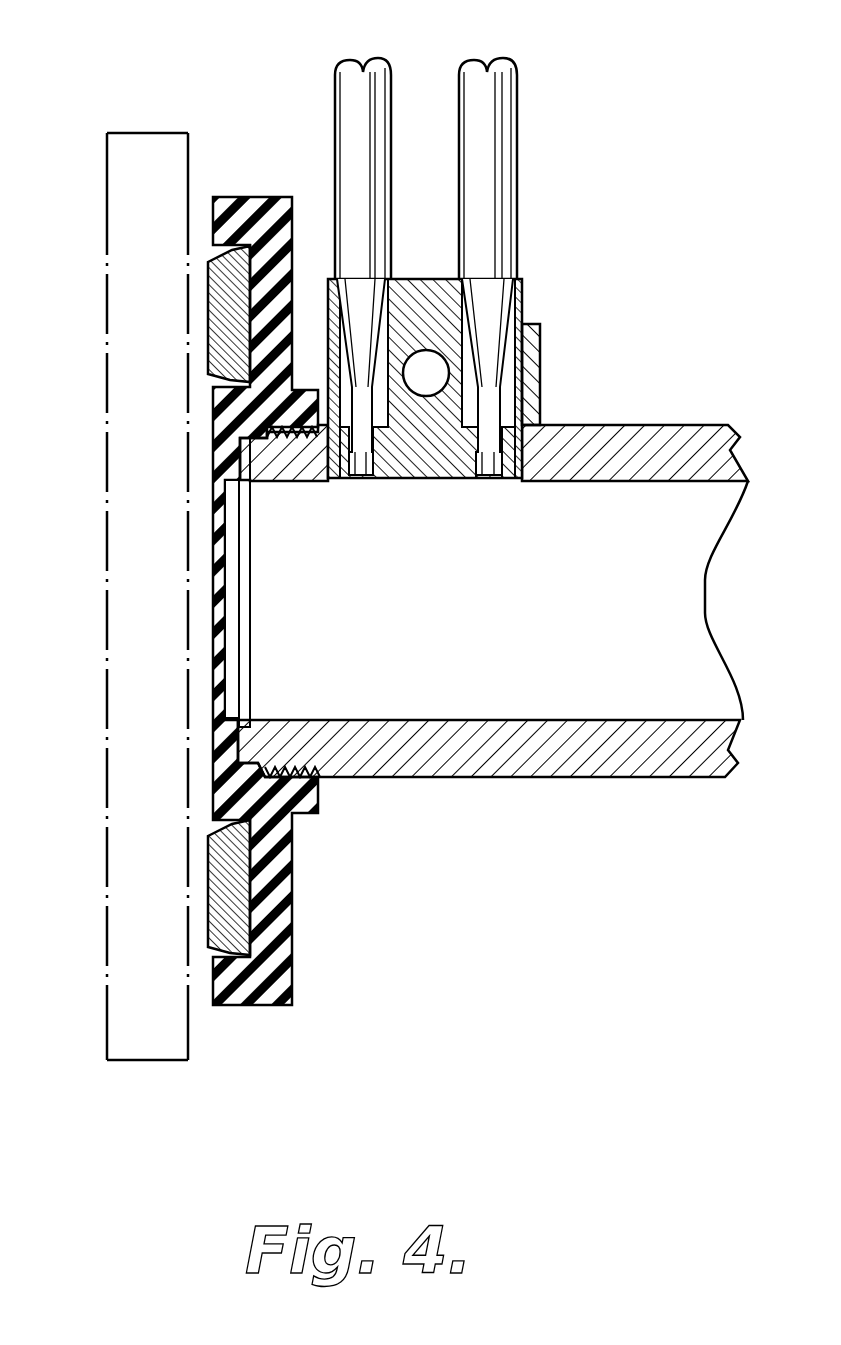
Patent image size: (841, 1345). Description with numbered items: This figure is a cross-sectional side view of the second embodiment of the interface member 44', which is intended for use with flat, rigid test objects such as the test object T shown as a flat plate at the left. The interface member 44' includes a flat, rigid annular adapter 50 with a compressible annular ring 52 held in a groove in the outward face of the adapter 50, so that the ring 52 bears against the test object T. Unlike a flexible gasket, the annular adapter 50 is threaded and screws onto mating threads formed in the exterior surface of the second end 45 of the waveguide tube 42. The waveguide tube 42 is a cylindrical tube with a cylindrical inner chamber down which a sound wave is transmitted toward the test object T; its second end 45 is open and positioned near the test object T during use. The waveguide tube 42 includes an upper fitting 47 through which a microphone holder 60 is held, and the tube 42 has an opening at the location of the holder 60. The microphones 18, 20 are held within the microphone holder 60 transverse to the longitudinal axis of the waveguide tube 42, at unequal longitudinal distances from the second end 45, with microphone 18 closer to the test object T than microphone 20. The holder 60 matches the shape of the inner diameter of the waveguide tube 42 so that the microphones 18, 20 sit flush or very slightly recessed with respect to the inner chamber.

The test object T is at (143, 140).
The microphone 18 is at (352, 75).
The microphone 20 is at (478, 75).
The waveguide tube 42 is at (692, 453).
The interface member 44' is at (227, 670).
The second end 45 is at (262, 742).
The upper fitting 47 is at (540, 373).
The annular adapter 50 is at (290, 892).
The compressible annular ring 52 is at (222, 890).
The microphone holder 60 is at (328, 330).